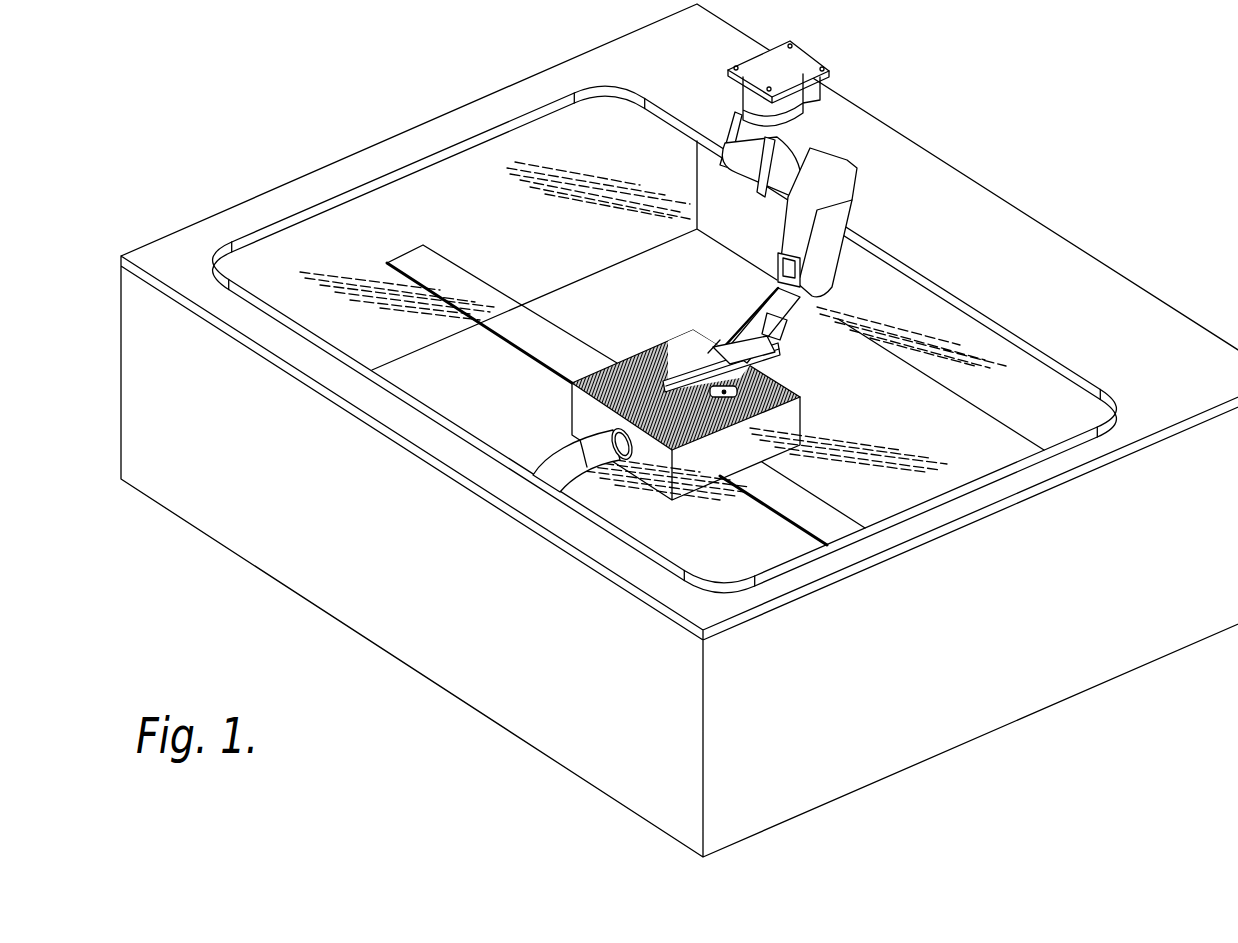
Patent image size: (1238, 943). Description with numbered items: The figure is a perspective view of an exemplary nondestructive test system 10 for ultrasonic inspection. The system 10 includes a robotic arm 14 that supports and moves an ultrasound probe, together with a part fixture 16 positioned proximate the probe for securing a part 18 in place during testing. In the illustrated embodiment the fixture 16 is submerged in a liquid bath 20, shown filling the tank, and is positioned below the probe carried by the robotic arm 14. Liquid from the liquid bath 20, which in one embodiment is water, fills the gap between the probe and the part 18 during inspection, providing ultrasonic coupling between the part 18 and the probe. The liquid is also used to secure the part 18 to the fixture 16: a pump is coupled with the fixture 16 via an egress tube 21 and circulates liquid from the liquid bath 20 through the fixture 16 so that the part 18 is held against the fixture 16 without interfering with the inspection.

The nondestructive test system 10 is at (188, 186).
The robotic arm 14 is at (833, 239).
The part fixture 16 is at (727, 458).
The part 18 is at (710, 343).
The liquid bath 20 is at (505, 172).
The egress tube 21 is at (552, 462).